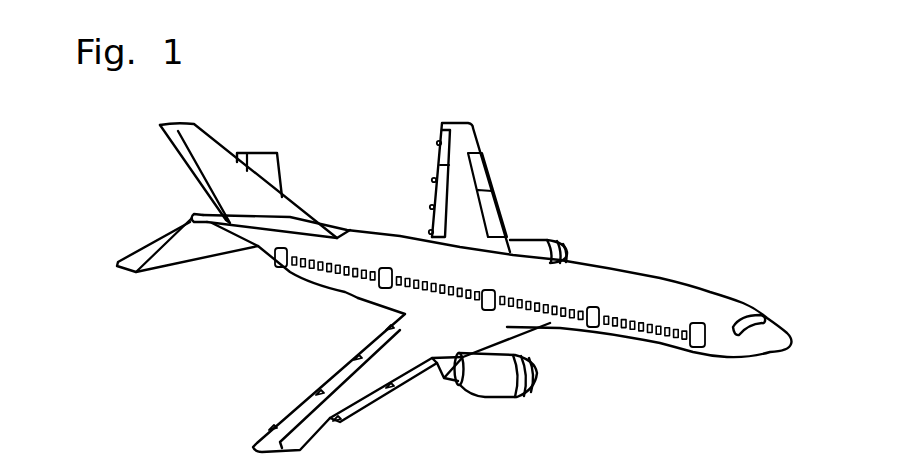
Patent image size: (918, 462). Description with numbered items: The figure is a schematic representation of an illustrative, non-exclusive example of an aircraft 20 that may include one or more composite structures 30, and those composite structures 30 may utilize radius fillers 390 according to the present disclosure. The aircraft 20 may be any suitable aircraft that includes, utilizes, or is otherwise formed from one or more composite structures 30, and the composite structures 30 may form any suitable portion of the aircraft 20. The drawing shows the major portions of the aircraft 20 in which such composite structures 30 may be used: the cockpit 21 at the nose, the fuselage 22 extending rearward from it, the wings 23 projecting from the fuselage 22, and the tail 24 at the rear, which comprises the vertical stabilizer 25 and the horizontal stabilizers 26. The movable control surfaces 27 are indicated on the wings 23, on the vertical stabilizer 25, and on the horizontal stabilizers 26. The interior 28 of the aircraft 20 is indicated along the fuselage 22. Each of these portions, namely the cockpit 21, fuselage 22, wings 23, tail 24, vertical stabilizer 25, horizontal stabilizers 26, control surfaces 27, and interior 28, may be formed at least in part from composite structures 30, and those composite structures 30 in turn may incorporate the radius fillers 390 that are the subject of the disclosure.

The aircraft 20 is at (120, 117).
The cockpit 21 is at (738, 311).
The fuselage 22 is at (635, 273).
The wings 23 is at (452, 338).
The tail 24 is at (143, 196).
The vertical stabilizer 25 is at (191, 138).
The horizontal stabilizers 26 is at (264, 168).
The control surfaces 27 is at (240, 153).
The interior 28 is at (648, 307).
The composite structures 30 is at (391, 248).
The radius fillers 390 is at (353, 240).